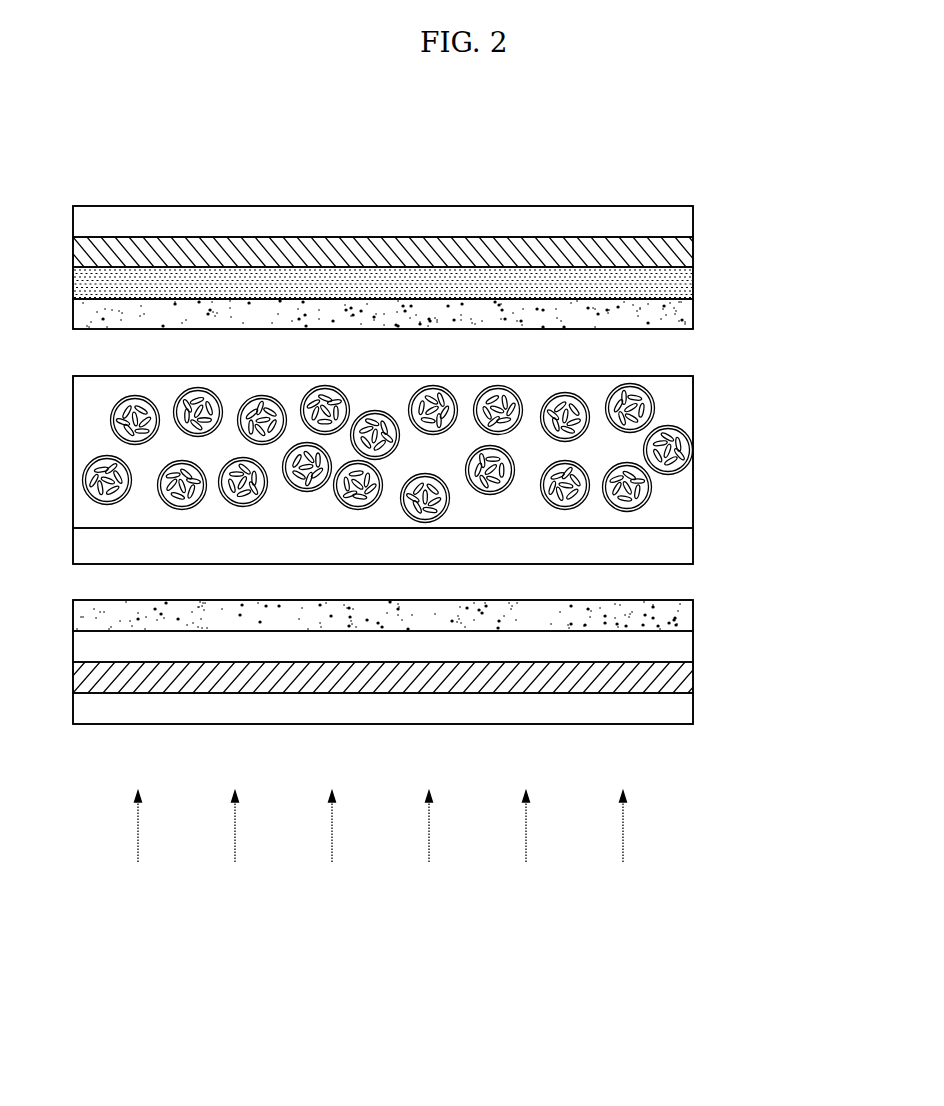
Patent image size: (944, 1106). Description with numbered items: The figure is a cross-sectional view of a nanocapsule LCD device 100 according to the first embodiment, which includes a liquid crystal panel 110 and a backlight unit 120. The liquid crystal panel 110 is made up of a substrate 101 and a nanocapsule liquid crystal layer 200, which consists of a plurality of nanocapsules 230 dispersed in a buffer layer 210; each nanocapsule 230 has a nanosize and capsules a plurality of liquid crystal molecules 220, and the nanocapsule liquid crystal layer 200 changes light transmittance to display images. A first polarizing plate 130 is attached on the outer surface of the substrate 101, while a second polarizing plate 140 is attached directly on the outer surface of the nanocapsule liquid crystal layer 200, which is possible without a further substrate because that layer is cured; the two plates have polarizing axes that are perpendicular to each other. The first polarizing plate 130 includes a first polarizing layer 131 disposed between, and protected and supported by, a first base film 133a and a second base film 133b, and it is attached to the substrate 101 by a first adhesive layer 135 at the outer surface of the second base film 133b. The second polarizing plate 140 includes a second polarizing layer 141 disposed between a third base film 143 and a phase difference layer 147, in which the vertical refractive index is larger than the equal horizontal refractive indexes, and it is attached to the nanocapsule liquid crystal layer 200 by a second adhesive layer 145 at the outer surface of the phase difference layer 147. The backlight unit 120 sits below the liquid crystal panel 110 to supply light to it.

The nanocapsule LCD device 100 is at (694, 124).
The liquid crystal panel 110 is at (726, 389).
The substrate 101 is at (688, 548).
The backlight unit 120 is at (381, 841).
The first polarizing plate 130 is at (787, 612).
The first polarizing layer 131 is at (688, 680).
The first base film 133a is at (685, 707).
The second base film 133b is at (685, 648).
The first adhesive layer 135 is at (692, 611).
The second polarizing plate 140 is at (782, 213).
The second polarizing layer 141 is at (692, 246).
The third base film 143 is at (690, 222).
The second adhesive layer 145 is at (685, 315).
The phase difference layer 147 is at (687, 285).
The nanocapsule liquid crystal layer 200 is at (453, 452).
The buffer layer 210 is at (688, 485).
The liquid crystal molecules 220 is at (692, 445).
The nanocapsules 230 is at (690, 433).